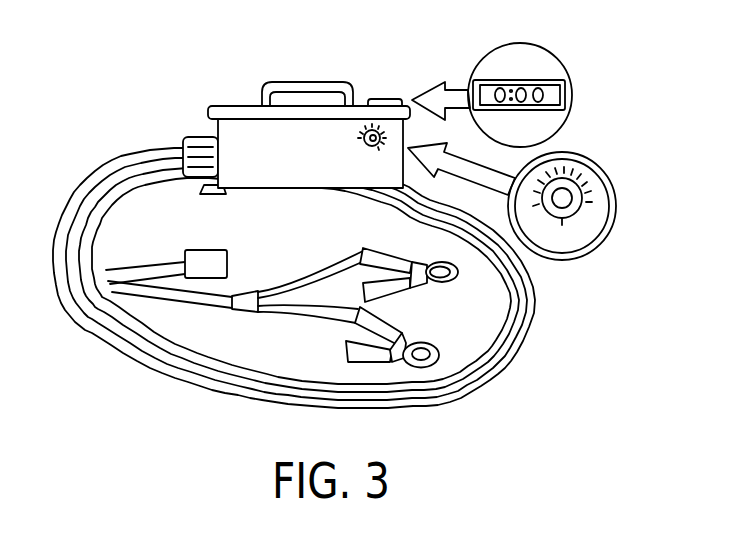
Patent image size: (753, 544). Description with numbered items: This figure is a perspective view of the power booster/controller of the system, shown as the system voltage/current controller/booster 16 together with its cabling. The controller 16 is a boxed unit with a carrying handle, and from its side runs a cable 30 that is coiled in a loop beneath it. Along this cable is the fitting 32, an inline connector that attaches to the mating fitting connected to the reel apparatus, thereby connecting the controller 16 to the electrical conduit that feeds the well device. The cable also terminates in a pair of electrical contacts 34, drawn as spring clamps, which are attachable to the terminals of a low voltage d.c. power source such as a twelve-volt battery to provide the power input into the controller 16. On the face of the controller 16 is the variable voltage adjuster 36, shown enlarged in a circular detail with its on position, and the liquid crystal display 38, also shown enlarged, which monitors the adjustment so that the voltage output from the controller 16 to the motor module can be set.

The system voltage/current controller/booster 16 is at (298, 81).
The cable 30 is at (520, 352).
The fitting 32 is at (224, 256).
The electrical contacts 34 is at (426, 344).
The variable voltage adjuster 36 is at (361, 137).
The liquid crystal display 38 is at (561, 67).